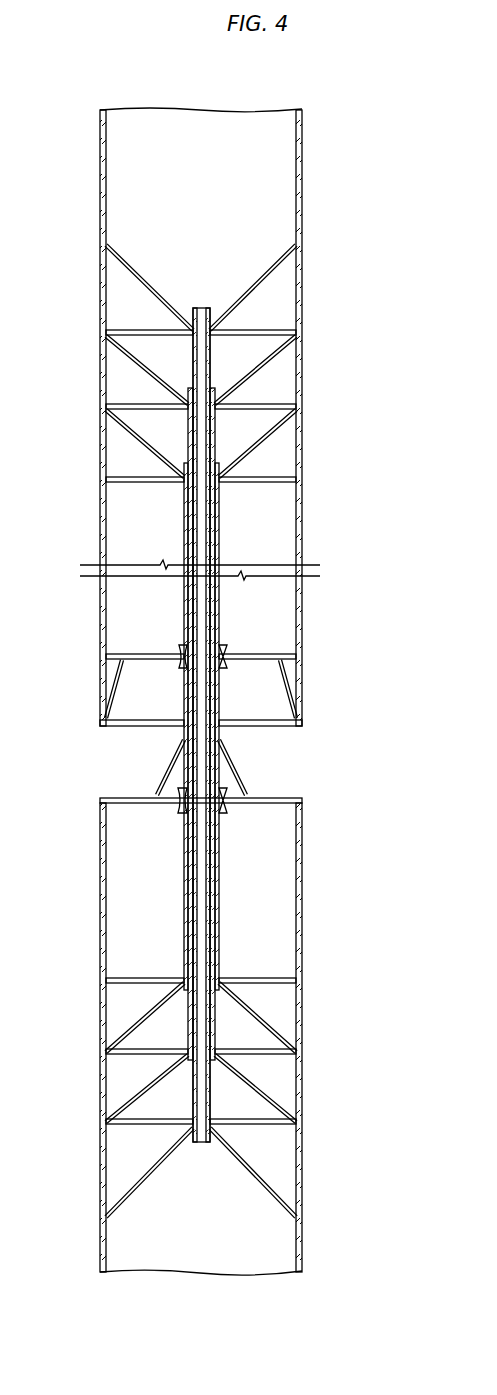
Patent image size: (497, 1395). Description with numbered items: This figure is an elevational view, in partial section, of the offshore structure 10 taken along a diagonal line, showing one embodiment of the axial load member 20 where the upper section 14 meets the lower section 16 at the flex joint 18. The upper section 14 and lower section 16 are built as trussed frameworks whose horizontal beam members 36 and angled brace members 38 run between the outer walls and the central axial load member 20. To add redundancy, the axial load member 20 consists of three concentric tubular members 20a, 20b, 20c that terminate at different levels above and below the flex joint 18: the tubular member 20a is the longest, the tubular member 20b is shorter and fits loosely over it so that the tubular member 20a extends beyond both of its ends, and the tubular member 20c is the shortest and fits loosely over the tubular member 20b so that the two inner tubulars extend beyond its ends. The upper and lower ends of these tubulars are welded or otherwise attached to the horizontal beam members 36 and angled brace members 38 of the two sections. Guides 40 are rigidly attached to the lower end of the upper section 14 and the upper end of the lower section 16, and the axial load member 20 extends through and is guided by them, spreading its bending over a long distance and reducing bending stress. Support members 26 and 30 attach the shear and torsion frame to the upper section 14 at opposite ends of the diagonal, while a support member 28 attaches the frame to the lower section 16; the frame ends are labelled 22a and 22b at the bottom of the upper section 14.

The offshore structure 10 is at (349, 591).
The upper section 14 is at (300, 310).
The lower section 16 is at (303, 921).
The flex joint 18 is at (98, 767).
The axial load member 20 is at (197, 725).
The tubular member 20a is at (193, 351).
The tubular member 20b is at (188, 430).
The tubular member 20c is at (184, 520).
The right end plate 22a is at (285, 727).
The left end plate 22b is at (118, 727).
The support member 26 is at (96, 686).
The support member 28 is at (250, 776).
The support member 30 is at (308, 688).
The horizontal beam members 36 is at (125, 331).
The angled brace members 38 is at (133, 265).
The guides 40 is at (228, 652).